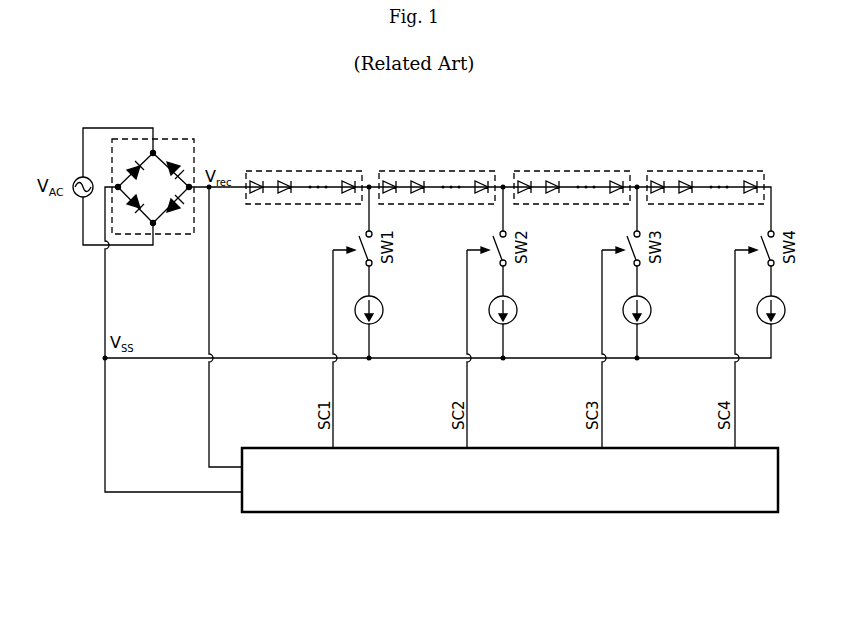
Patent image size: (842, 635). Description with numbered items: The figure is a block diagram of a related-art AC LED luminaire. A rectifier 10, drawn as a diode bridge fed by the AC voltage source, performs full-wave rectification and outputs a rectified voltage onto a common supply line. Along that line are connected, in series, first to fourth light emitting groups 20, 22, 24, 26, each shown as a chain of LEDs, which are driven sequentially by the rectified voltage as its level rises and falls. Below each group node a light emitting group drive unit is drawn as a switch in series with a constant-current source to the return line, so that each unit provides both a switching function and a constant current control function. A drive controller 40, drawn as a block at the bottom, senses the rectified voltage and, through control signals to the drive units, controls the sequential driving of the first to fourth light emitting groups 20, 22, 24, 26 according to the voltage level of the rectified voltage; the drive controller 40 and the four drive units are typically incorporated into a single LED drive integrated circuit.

The rectifier 10 is at (178, 135).
The first light emitting group 20 is at (301, 168).
The second light emitting group 22 is at (436, 168).
The third light emitting group 24 is at (570, 168).
The fourth light emitting group 26 is at (704, 168).
The drive controller 40 is at (263, 447).